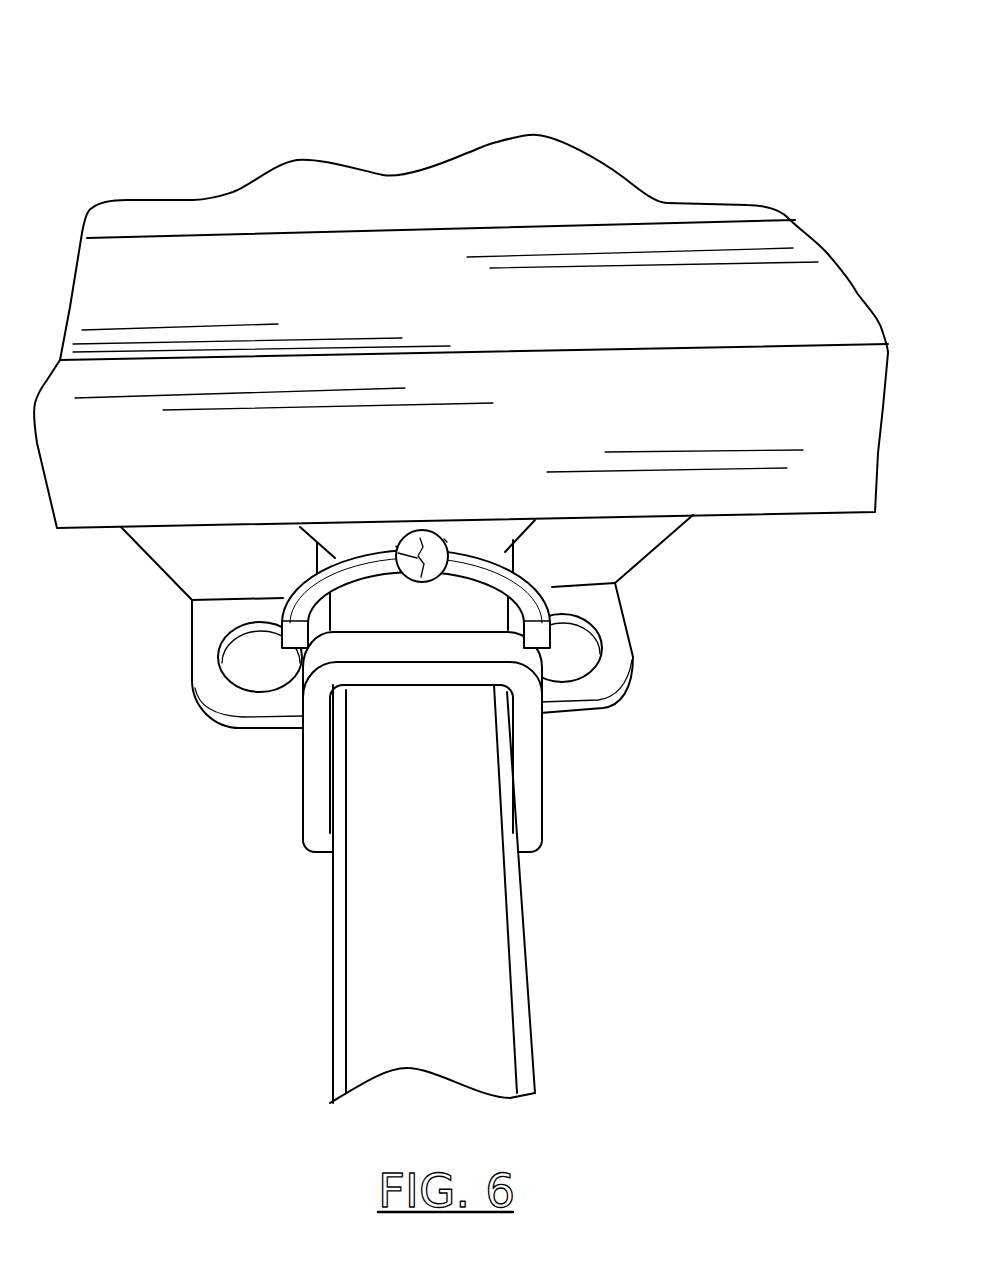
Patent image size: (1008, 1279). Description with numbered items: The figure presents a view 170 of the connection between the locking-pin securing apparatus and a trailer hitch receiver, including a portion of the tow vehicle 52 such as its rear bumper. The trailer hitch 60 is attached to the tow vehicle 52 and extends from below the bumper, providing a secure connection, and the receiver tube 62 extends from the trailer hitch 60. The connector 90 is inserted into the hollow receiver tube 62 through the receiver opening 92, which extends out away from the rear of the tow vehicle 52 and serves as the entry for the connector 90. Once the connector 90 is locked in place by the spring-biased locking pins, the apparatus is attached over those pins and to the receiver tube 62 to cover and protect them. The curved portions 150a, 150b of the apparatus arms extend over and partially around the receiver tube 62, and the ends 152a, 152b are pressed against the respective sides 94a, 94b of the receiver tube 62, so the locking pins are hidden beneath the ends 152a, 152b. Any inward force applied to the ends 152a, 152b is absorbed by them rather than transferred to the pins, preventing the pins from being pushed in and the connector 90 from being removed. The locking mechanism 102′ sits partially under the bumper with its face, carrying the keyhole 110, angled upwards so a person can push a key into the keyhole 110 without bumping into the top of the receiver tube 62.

The view 170 is at (340, 35).
The tow vehicle 52 is at (822, 497).
The trailer hitch 60 is at (190, 643).
The receiver tube 62 is at (428, 619).
The connector 90 is at (443, 941).
The receiver opening 92 is at (308, 817).
The side of the receiver tube 94a is at (517, 552).
The side of the receiver tube 94b is at (310, 555).
The locking mechanism 102′ is at (445, 540).
The keyhole 110 is at (398, 548).
The curved portion 150a is at (523, 577).
The curved portion 150b is at (313, 587).
The end 152a is at (553, 617).
The end 152b is at (280, 640).